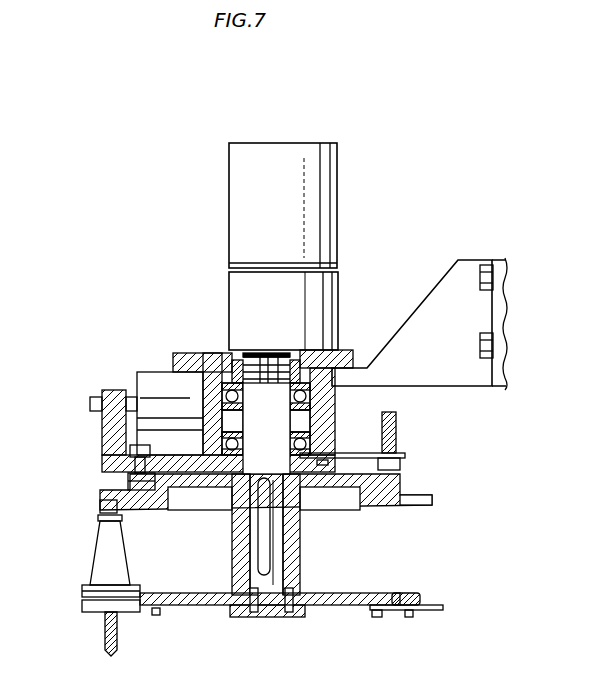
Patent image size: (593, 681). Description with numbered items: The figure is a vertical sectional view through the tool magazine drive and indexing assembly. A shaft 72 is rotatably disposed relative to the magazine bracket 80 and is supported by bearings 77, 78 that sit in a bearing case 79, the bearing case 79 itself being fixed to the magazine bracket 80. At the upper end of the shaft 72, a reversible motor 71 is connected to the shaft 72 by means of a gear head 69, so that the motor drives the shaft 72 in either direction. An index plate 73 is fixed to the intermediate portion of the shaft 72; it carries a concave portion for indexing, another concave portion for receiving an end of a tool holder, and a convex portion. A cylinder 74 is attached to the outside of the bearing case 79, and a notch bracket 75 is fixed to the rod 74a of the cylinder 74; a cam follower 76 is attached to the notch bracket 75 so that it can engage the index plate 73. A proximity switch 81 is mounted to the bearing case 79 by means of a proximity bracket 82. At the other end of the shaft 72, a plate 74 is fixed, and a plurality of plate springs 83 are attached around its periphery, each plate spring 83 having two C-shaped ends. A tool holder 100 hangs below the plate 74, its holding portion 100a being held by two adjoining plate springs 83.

The reversible motor 71 is at (328, 210).
The gear head 69 is at (330, 292).
The bearing case 79 is at (350, 356).
The magazine bracket 80 is at (446, 300).
The notch bracket 75 is at (108, 448).
The rod 74a is at (95, 395).
The cylinder 74 is at (155, 380).
The cam follower 76 is at (128, 485).
The bearing 77 is at (312, 398).
The bearing 78 is at (312, 440).
The proximity bracket 82 is at (365, 455).
The proximity switch 81 is at (394, 428).
The index plate 73 is at (392, 506).
The shaft 72 is at (275, 523).
The plate spring 83 is at (435, 606).
The tool holder 100 is at (100, 557).
The holding portion 100a is at (86, 612).